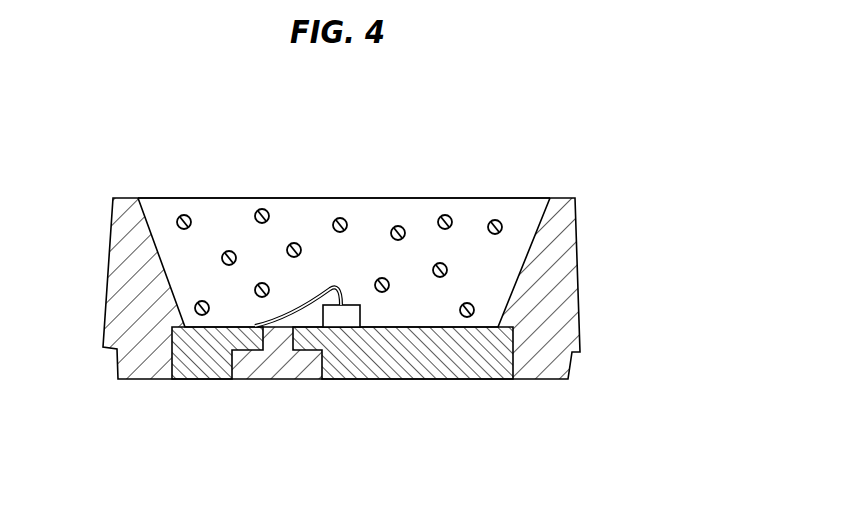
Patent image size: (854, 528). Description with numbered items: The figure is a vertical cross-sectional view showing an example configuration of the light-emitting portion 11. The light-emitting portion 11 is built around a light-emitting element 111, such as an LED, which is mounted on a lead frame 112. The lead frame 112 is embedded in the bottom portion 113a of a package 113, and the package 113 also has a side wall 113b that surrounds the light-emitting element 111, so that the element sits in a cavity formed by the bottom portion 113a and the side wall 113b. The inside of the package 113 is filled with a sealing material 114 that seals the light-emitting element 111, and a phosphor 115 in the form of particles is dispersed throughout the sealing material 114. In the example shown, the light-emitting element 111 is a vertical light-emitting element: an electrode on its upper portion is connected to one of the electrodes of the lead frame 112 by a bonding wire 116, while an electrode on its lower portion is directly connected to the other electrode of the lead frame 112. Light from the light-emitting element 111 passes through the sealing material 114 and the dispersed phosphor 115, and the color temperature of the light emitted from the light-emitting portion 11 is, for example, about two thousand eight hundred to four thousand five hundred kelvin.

The light-emitting portion 11 is at (487, 138).
The light-emitting element 111 is at (340, 313).
The lead frame 112 is at (480, 367).
The package 113 is at (563, 247).
The bottom portion 113a is at (278, 365).
The side wall 113b is at (120, 238).
The sealing material 114 is at (520, 210).
The phosphor 115 is at (395, 228).
The bonding wire 116 is at (293, 308).